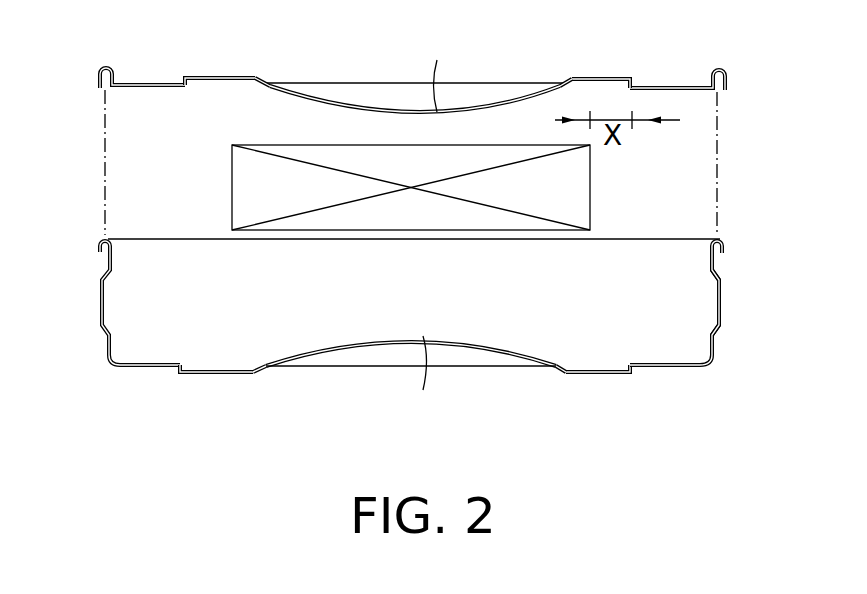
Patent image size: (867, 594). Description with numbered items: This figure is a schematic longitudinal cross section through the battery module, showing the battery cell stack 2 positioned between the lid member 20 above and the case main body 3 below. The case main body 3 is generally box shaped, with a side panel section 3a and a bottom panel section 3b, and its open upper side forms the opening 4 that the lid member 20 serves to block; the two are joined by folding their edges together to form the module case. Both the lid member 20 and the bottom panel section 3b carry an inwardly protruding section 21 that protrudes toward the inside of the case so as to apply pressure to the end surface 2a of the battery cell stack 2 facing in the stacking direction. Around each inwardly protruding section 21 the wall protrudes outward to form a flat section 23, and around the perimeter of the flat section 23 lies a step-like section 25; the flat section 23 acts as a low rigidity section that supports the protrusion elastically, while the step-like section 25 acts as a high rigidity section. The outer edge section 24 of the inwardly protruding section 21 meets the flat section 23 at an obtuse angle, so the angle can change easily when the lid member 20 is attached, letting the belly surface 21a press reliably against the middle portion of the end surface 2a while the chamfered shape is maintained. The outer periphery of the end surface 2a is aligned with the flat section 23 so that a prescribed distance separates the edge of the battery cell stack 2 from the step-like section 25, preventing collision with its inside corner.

The lid member 20 is at (100, 97).
The inwardly protruding section 21 is at (322, 107).
The belly surface 21a is at (435, 227).
The flat section 23 is at (225, 78).
The outer edge section 24 is at (260, 82).
The step-like section 25 is at (190, 72).
The battery cell stack 2 is at (573, 190).
The end surface 2a is at (438, 144).
The case main body 3 is at (98, 262).
The side panel section 3a is at (722, 305).
The bottom panel section 3b is at (686, 369).
The opening 4 is at (655, 253).